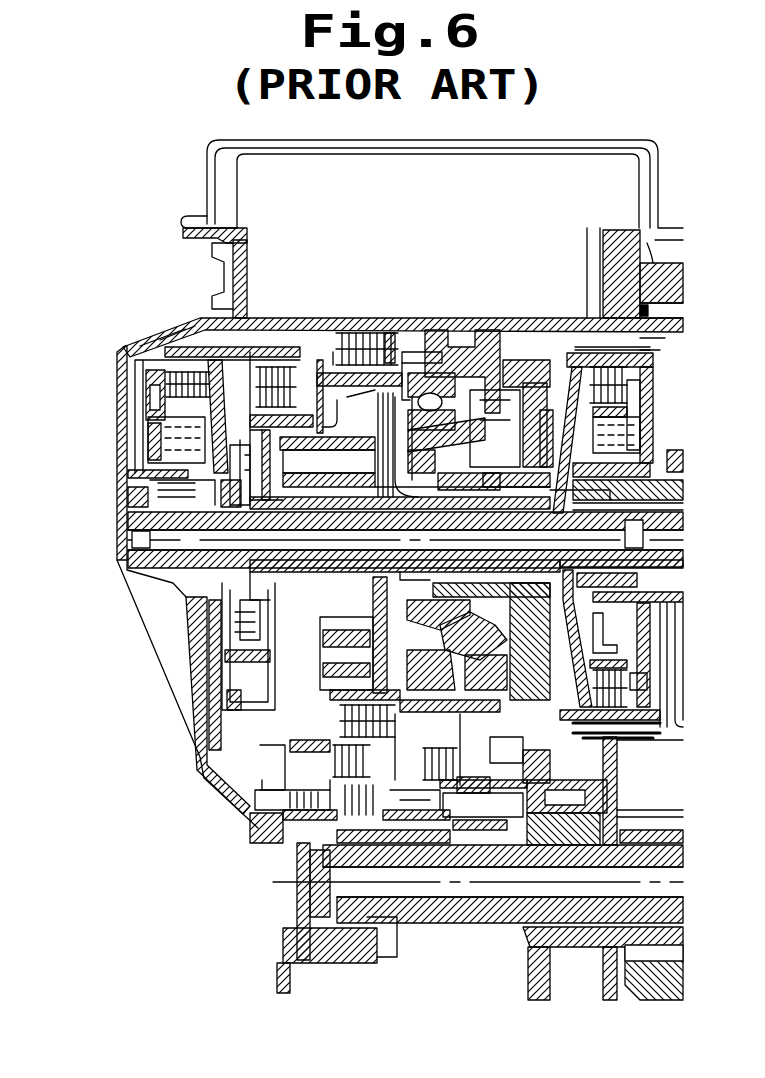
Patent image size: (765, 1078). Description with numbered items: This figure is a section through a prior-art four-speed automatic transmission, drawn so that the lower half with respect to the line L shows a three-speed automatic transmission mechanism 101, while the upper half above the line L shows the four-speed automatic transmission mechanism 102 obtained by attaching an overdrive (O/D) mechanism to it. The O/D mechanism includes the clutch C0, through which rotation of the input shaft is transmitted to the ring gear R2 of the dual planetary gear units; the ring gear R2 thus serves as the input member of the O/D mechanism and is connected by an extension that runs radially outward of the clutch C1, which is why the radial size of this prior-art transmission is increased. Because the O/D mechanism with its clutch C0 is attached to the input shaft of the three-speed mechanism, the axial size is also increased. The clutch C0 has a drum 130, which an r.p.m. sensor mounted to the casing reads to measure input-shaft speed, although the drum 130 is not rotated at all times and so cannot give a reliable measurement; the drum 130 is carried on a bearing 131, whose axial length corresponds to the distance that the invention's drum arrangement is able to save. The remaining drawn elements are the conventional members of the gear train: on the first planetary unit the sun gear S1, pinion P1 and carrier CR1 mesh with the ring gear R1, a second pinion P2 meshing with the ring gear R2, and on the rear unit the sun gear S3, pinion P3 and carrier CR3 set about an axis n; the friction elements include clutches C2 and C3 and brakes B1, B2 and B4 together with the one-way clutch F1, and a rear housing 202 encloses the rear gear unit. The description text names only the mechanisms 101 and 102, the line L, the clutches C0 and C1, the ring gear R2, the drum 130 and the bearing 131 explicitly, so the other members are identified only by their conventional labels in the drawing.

The four-speed automatic transmission mechanism 102 is at (155, 332).
The drum 130 is at (177, 350).
The O/D mechanism clutch C0 is at (140, 345).
The clutch C1 is at (168, 782).
The brake B2 is at (367, 332).
The one-way clutch F1 is at (430, 395).
The clutch C2 is at (633, 755).
The bearing 131 is at (130, 485).
The line L is at (120, 540).
The pinion gear P1 is at (246, 540).
The sun gear S1 is at (430, 523).
The carrier CR1 is at (345, 578).
The pinion gear P2 is at (385, 628).
The ring gear R1 is at (253, 647).
The ring gear R2 is at (335, 700).
The three-speed automatic transmission mechanism 101 is at (183, 736).
The rear housing 202 is at (183, 805).
The brake B4 is at (250, 800).
The clutch C3 is at (330, 826).
The output shaft axis n is at (300, 882).
The sun gear S3 is at (495, 840).
The pinion gear P3 is at (530, 840).
The carrier CR3 is at (562, 843).
The brake B1 is at (645, 717).